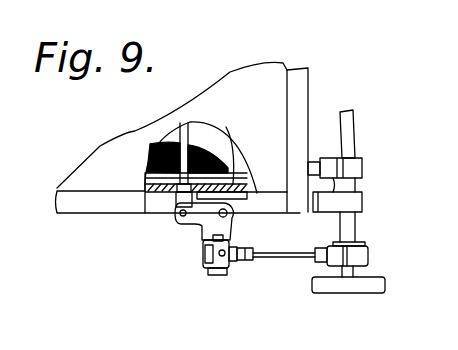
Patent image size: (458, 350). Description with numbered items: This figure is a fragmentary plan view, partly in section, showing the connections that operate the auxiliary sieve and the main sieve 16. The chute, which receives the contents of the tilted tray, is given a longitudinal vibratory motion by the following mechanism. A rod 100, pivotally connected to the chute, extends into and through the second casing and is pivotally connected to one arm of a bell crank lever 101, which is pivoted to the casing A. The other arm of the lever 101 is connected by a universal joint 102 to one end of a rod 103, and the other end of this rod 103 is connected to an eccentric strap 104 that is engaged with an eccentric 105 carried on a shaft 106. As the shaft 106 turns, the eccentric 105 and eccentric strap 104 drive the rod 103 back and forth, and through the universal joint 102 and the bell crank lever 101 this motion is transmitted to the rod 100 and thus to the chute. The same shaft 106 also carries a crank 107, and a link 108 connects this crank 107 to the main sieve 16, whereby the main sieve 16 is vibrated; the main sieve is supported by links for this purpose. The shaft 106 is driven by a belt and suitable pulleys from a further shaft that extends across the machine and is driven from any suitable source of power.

The casing A is at (88, 198).
The main sieve 16 is at (146, 150).
The rod 100 is at (187, 147).
The bell crank lever 101 is at (208, 225).
The universal joint 102 is at (208, 265).
The rod 103 is at (267, 257).
The eccentric strap 104 is at (362, 255).
The eccentric 105 is at (352, 242).
The shaft 106 is at (352, 223).
The crank 107 is at (335, 157).
The link 108 is at (232, 172).